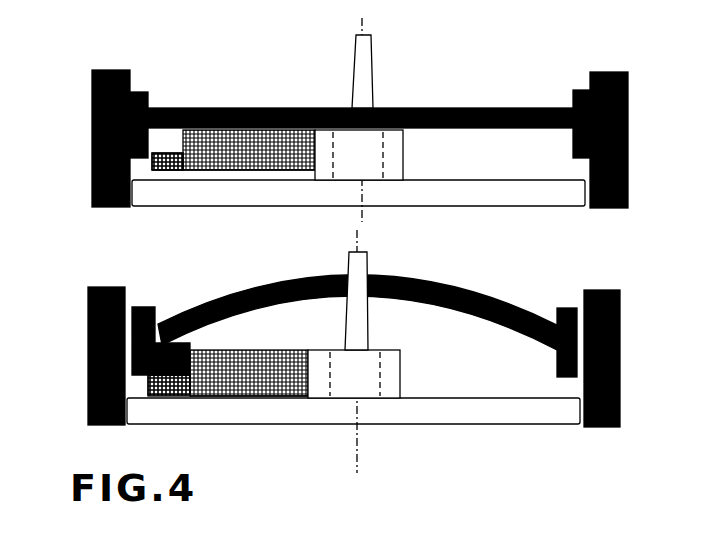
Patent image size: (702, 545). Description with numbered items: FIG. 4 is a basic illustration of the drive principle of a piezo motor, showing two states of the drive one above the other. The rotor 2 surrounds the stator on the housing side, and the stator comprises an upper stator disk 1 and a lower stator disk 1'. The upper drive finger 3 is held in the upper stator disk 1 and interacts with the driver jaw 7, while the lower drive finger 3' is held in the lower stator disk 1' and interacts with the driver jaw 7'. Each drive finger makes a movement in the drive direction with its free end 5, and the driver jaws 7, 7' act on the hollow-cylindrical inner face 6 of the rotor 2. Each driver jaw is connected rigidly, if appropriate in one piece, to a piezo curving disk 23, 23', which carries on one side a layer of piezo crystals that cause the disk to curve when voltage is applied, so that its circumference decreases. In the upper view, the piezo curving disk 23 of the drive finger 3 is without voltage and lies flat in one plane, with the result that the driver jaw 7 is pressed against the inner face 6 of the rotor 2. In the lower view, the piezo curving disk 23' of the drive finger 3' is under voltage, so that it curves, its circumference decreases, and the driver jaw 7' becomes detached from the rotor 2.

The upper stator disk 1 is at (358, 140).
The lower stator disk 1' is at (353, 374).
The rotor 2 is at (92, 140).
The drive finger 3 is at (233, 102).
The drive finger 3' is at (228, 429).
The free end 5 is at (168, 170).
The inner face 6 is at (149, 80).
The driver jaw 7 is at (390, 120).
The driver jaw 7' is at (376, 325).
The piezo curving disk 23 is at (360, 73).
The piezo curving disk 23' is at (357, 284).